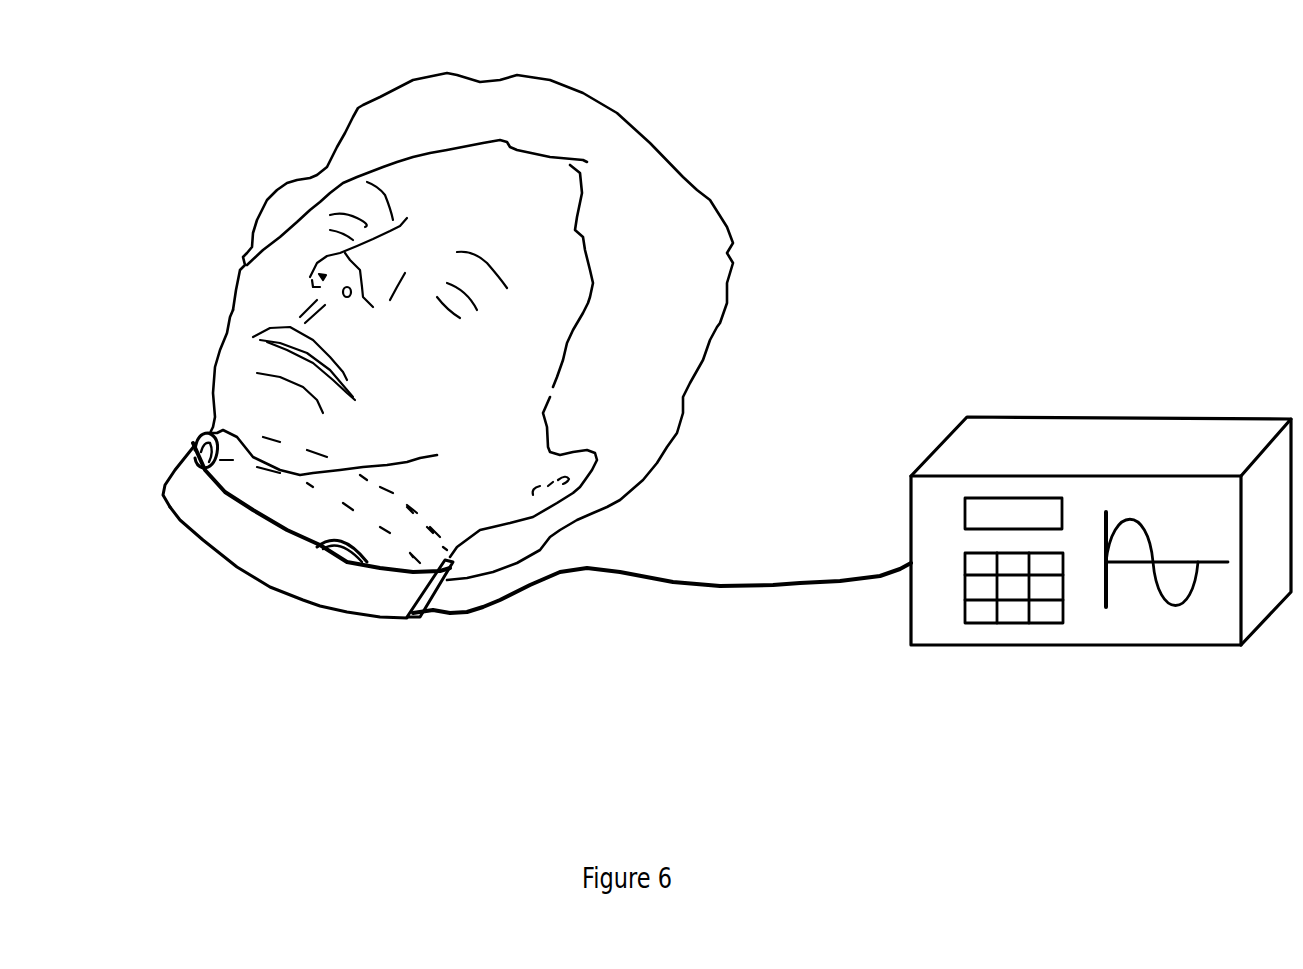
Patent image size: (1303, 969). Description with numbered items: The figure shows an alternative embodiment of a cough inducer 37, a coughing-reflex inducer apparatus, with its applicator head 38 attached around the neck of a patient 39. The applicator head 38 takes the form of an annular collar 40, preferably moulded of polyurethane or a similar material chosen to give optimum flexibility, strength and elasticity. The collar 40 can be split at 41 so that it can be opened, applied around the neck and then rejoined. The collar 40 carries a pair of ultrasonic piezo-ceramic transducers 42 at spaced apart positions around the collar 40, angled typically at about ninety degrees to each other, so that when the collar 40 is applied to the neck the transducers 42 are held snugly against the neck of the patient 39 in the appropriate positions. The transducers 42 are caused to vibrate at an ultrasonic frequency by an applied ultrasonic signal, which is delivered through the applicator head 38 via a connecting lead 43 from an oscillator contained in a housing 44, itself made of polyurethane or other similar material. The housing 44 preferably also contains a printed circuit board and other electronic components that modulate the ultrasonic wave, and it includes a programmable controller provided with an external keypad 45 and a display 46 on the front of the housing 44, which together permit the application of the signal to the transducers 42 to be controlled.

The cough inducer 37 is at (601, 651).
The applicator head 38 is at (155, 464).
The patient 39 is at (196, 234).
The annular collar 40 is at (193, 523).
The split 41 is at (412, 620).
The ultrasonic piezo-ceramic transducers 42 is at (197, 447).
The connecting lead 43 is at (777, 588).
The housing 44 is at (1116, 410).
The keypad 45 is at (972, 633).
The display 46 is at (953, 514).